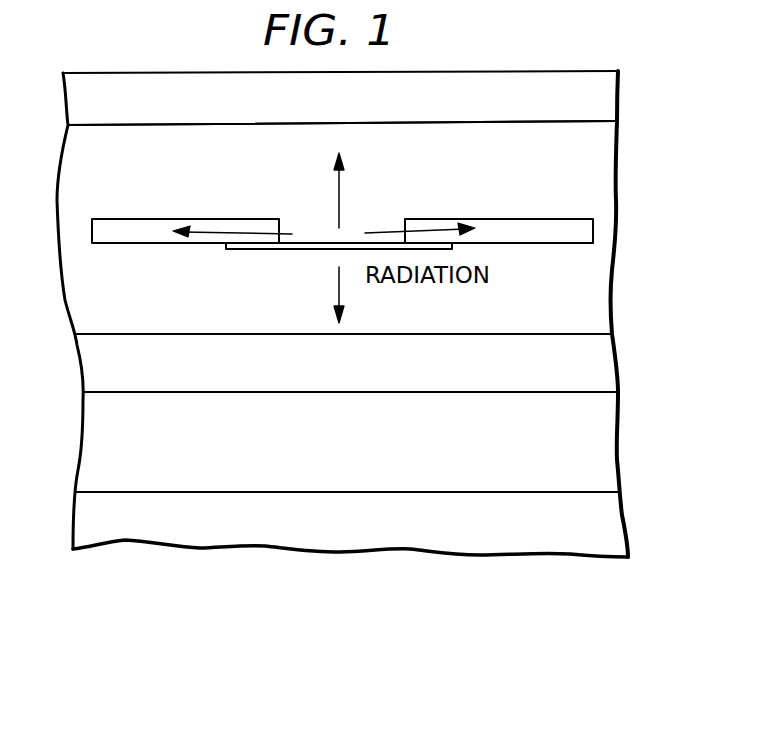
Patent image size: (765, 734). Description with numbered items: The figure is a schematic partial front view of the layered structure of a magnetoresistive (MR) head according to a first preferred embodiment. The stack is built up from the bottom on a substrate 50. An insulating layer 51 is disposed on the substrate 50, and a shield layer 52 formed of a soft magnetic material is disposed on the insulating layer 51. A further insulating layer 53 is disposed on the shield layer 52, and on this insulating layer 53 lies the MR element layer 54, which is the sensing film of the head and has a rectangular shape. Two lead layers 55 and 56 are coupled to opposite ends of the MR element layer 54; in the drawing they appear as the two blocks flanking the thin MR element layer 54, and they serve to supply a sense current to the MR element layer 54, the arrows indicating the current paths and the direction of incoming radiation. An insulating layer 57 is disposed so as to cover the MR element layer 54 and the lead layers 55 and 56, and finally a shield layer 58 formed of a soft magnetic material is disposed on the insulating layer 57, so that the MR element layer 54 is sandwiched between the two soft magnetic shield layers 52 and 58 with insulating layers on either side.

The substrate 50 is at (607, 533).
The insulating layer 51 is at (600, 452).
The shield layer 52 is at (595, 372).
The insulating layer 53 is at (592, 291).
The MR element layer 54 is at (297, 250).
The lead layer 55 is at (583, 231).
The lead layer 56 is at (117, 219).
The insulating layer 57 is at (585, 164).
The shield layer 58 is at (603, 102).